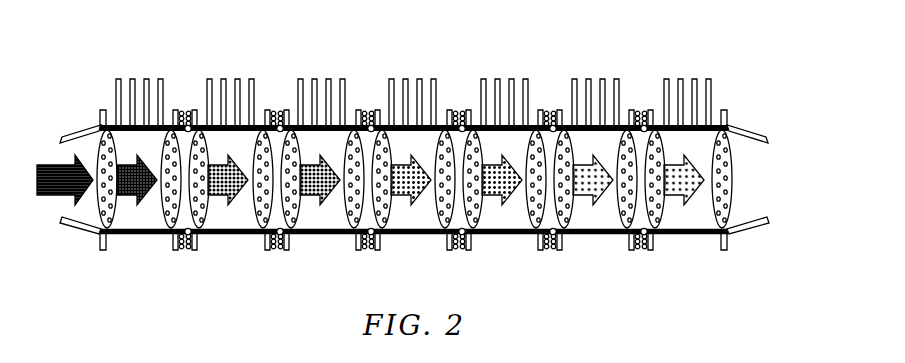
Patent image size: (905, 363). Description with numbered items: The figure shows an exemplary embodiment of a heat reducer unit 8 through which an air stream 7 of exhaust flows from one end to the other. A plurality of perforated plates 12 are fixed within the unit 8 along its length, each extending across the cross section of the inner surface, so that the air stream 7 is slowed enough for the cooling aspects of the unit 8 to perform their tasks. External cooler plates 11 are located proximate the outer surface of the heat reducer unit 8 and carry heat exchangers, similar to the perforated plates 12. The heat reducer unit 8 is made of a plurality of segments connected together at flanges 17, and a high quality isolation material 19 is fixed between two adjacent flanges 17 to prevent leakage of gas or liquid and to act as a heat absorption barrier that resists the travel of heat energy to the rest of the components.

The air stream 7 is at (66, 165).
The heat reducer unit 8 is at (747, 126).
The external cooler plates 11 is at (497, 79).
The perforated plates 12 is at (343, 153).
The flanges 17 is at (197, 250).
The isolation material 19 is at (278, 250).